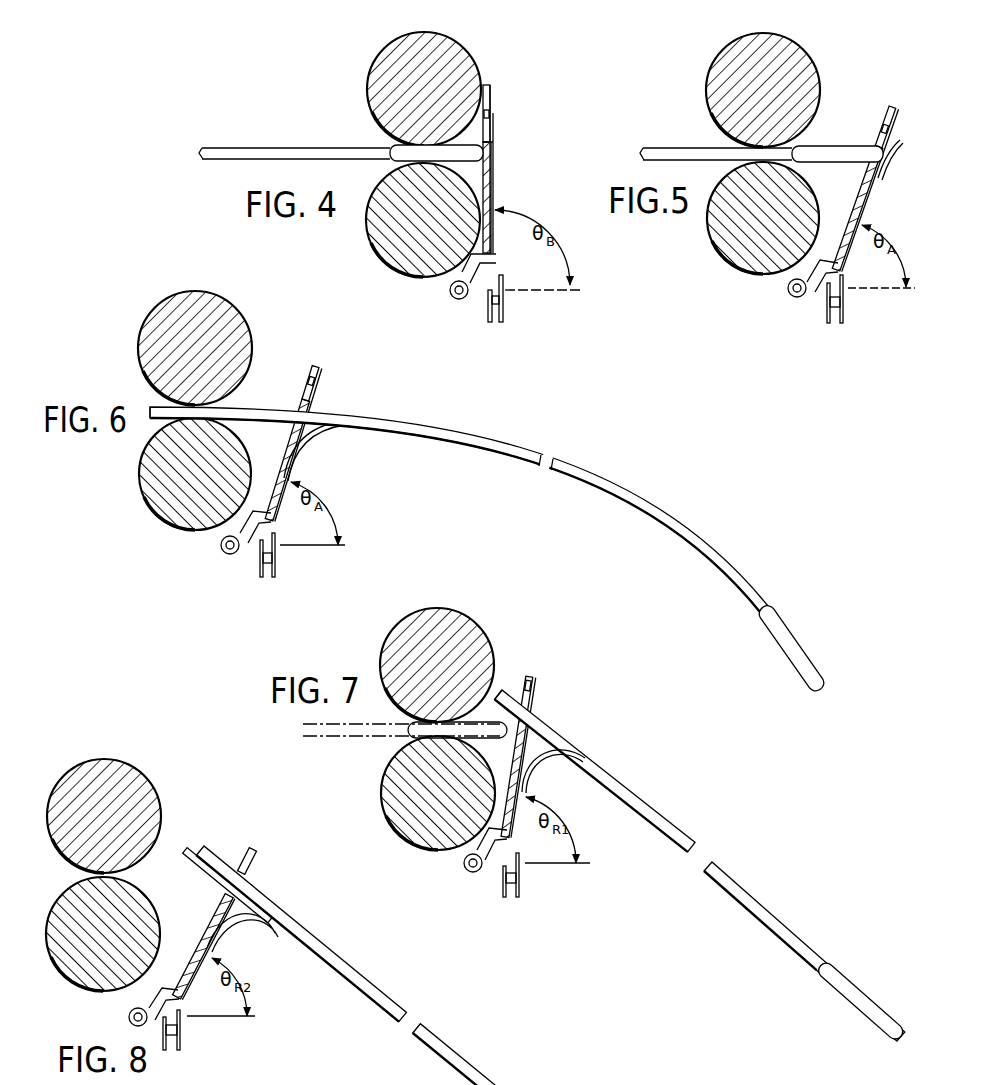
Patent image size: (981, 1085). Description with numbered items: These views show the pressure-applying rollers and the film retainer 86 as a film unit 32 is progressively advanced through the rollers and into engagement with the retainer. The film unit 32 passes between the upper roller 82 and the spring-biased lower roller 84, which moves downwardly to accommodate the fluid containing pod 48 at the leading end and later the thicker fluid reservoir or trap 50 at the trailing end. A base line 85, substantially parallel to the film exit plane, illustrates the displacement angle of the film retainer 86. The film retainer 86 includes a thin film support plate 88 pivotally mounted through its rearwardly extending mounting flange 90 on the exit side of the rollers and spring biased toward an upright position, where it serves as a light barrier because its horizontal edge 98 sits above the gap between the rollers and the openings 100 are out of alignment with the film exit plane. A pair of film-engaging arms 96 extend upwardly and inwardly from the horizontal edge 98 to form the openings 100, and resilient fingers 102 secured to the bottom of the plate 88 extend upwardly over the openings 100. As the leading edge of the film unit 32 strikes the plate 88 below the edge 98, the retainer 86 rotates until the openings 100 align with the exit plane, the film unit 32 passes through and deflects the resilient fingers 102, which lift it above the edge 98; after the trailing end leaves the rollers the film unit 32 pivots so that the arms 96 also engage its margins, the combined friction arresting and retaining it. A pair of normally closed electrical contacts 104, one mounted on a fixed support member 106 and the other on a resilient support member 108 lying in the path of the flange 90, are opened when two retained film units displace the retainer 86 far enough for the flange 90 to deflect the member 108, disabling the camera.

In FIG. 4, the film unit 32 is at (303, 143).
In FIG. 5, the film unit 32 is at (690, 155).
In FIG. 6, the film unit 32 is at (618, 450).
In FIG. 7, the film unit 32 is at (678, 812).
In FIG. 4, the fluid containing pod 48 is at (392, 160).
In FIG. 5, the fluid containing pod 48 is at (818, 148).
In FIG. 6, the fluid containing pod 48 is at (800, 666).
In FIG. 7, the fluid containing pod 48 is at (486, 738).
In FIG. 6, the fluid reservoir or trap 50 is at (152, 409).
In FIG. 7, the fluid reservoir or trap 50 is at (503, 691).
In FIG. 8, the fluid reservoir or trap 50 is at (196, 856).
In FIG. 4, the upper roller 82 is at (440, 45).
In FIG. 5, the upper roller 82 is at (726, 62).
In FIG. 6, the upper roller 82 is at (244, 330).
In FIG. 7, the upper roller 82 is at (482, 638).
In FIG. 8, the upper roller 82 is at (147, 793).
In FIG. 4, the lower roller 84 is at (388, 226).
In FIG. 5, the lower roller 84 is at (748, 256).
In FIG. 6, the lower roller 84 is at (160, 515).
In FIG. 7, the lower roller 84 is at (400, 828).
In FIG. 8, the lower roller 84 is at (98, 990).
In FIG. 4, the base line 85 is at (552, 290).
In FIG. 4, the film retainer 86 is at (502, 130).
In FIG. 4, the film support plate 88 is at (494, 170).
In FIG. 5, the film support plate 88 is at (858, 190).
In FIG. 4, the mounting flange 90 is at (496, 260).
In FIG. 4, the film-engaging arm 96 is at (487, 110).
In FIG. 5, the film-engaging arm 96 is at (893, 116).
In FIG. 6, the film-engaging arm 96 is at (320, 378).
In FIG. 7, the film-engaging arm 96 is at (535, 690).
In FIG. 8, the film-engaging arm 96 is at (253, 856).
In FIG. 4, the horizontal edge 98 is at (494, 146).
In FIG. 4, the opening 100 is at (491, 118).
In FIG. 5, the opening 100 is at (870, 140).
In FIG. 6, the opening 100 is at (299, 399).
In FIG. 7, the opening 100 is at (517, 714).
In FIG. 8, the opening 100 is at (212, 889).
In FIG. 4, the resilient finger 102 is at (494, 135).
In FIG. 5, the resilient finger 102 is at (881, 170).
In FIG. 6, the resilient finger 102 is at (330, 428).
In FIG. 7, the resilient finger 102 is at (575, 764).
In FIG. 8, the resilient finger 102 is at (238, 932).
In FIG. 4, the electrical contacts 104 is at (513, 303).
In FIG. 5, the electrical contacts 104 is at (845, 298).
In FIG. 6, the electrical contacts 104 is at (278, 552).
In FIG. 7, the electrical contacts 104 is at (528, 877).
In FIG. 8, the electrical contacts 104 is at (190, 1025).
In FIG. 4, the fixed support member 106 is at (488, 310).
In FIG. 4, the resilient support member 108 is at (504, 283).